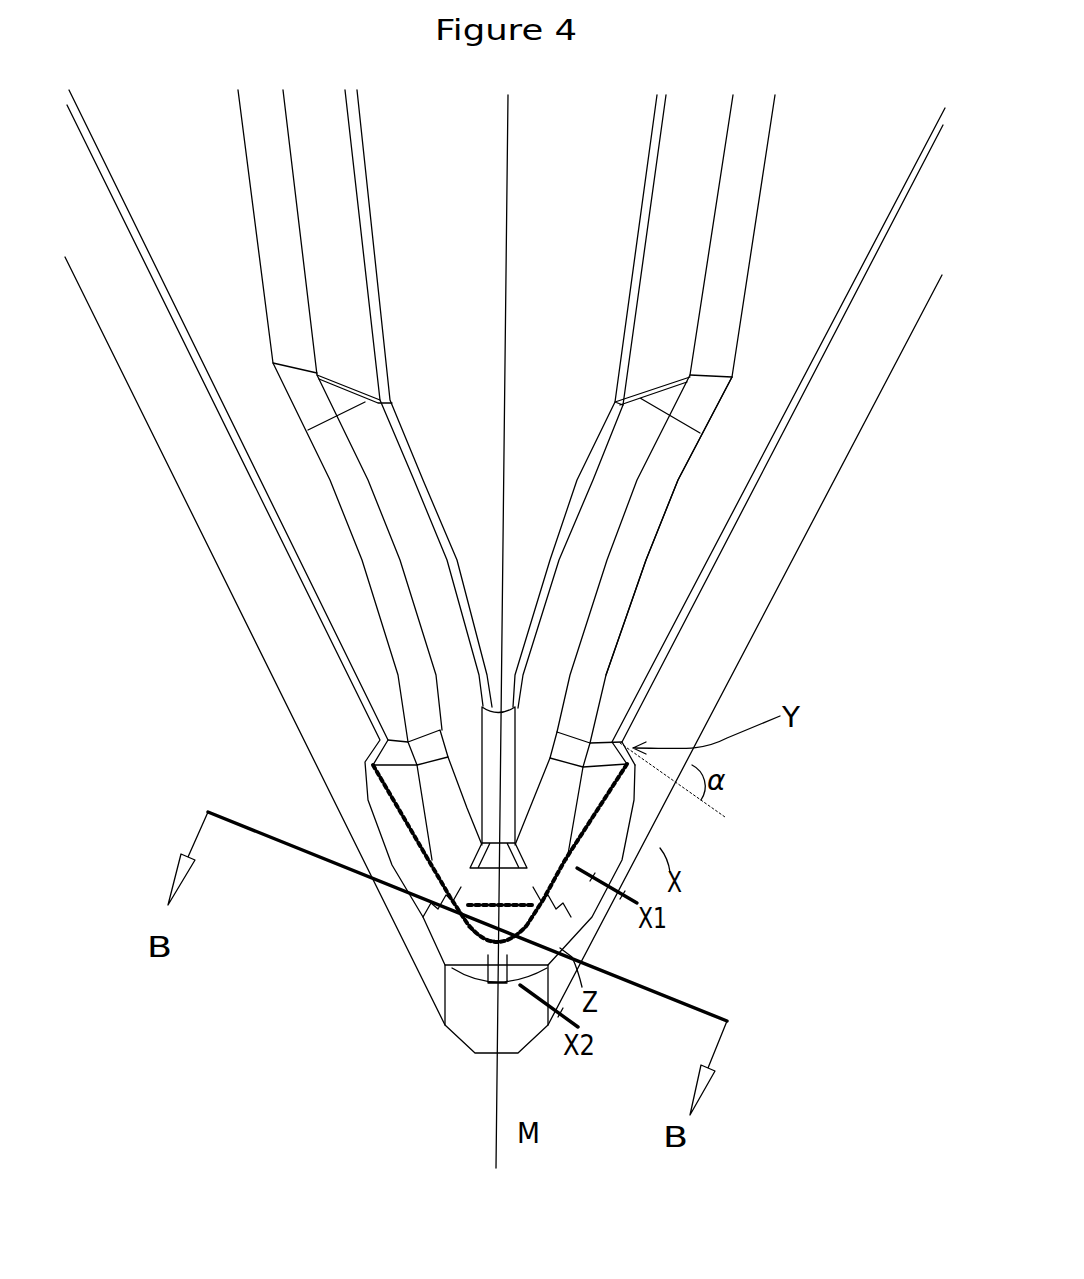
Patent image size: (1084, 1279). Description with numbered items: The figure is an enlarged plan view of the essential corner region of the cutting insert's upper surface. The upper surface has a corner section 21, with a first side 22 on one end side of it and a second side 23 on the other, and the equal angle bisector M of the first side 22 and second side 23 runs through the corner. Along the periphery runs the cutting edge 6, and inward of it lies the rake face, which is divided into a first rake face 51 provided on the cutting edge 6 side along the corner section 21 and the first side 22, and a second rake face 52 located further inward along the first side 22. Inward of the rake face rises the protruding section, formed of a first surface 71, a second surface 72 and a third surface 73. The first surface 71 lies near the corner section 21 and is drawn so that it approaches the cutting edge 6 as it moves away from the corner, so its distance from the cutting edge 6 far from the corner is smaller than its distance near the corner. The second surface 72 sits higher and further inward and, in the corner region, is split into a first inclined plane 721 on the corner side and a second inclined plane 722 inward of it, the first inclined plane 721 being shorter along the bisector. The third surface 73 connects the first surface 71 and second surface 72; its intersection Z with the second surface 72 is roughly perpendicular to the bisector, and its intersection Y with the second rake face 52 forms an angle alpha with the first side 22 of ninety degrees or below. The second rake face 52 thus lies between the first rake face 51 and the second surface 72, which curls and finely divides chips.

The corner section 21 is at (493, 1055).
The first side 22 is at (837, 473).
The second side 23 is at (268, 690).
The first rake face 51 is at (720, 650).
The second rake face 52 is at (668, 585).
The cutting edge 6 is at (655, 820).
The first surface 71 is at (550, 922).
The second surface 72 is at (543, 833).
The first inclined plane 721 is at (425, 873).
The second inclined plane 722 is at (497, 835).
The third surface 73 is at (445, 918).